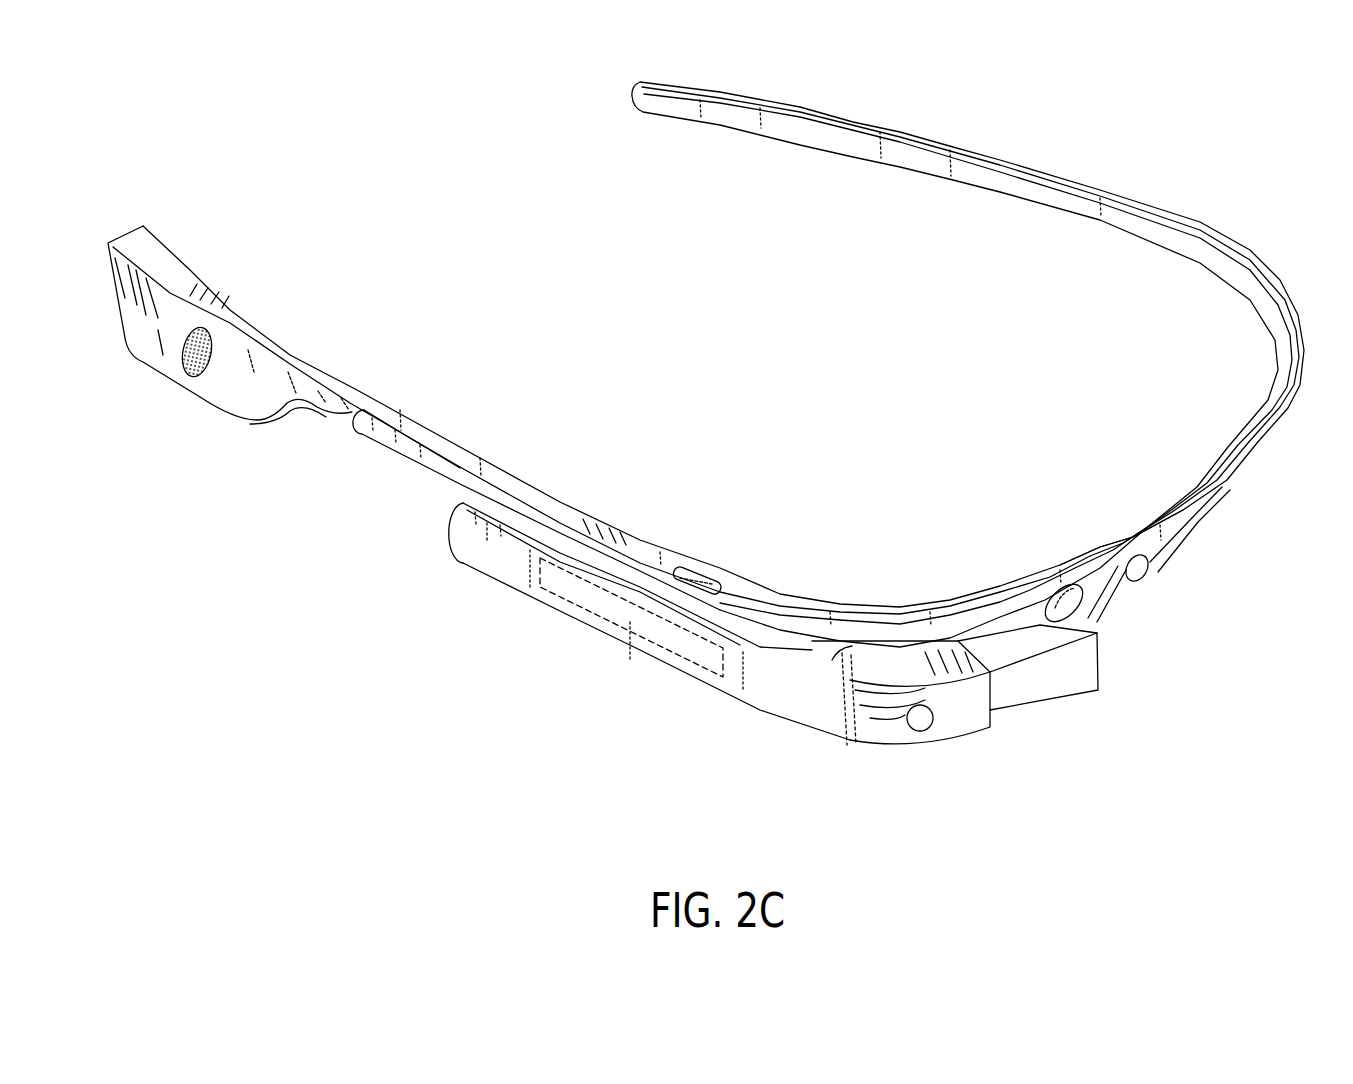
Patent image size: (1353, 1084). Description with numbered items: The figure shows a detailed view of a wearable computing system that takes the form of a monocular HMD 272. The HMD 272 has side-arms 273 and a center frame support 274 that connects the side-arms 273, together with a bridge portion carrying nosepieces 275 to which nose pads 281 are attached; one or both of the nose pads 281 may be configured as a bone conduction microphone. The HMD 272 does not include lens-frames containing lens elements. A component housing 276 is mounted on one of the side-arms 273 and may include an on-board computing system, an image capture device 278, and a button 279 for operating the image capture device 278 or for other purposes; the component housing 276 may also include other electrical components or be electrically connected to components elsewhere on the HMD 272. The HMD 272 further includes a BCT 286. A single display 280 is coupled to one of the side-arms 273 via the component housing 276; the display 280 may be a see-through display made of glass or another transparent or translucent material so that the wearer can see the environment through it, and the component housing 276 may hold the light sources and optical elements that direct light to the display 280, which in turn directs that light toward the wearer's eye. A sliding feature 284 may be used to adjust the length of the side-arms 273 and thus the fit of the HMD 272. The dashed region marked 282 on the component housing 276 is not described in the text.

The HMD 272 is at (1104, 809).
The side-arms 273 is at (853, 122).
The center frame support 274 is at (1125, 540).
The nosepieces 275 is at (1173, 560).
The component housing 276 is at (600, 632).
The image capture device 278 is at (918, 731).
The button 279 is at (718, 582).
The display 280 is at (1050, 703).
The nose pads 281 is at (1152, 584).
The display element 282 is at (675, 635).
The sliding feature 284 is at (407, 452).
The BCT 286 is at (187, 350).